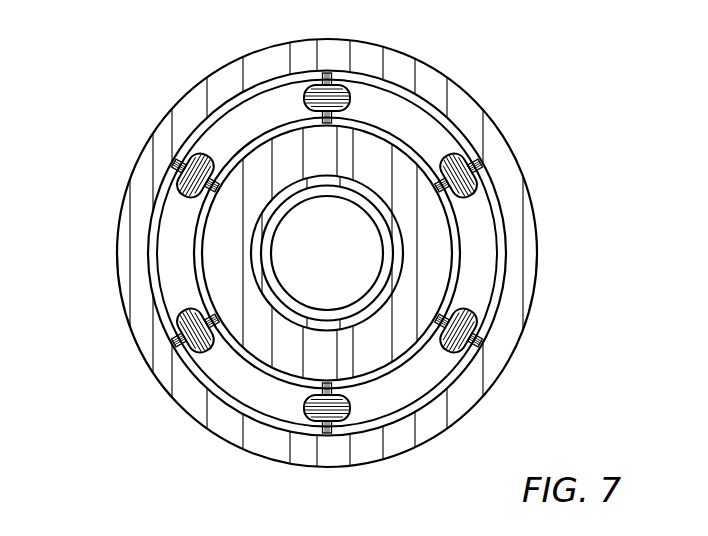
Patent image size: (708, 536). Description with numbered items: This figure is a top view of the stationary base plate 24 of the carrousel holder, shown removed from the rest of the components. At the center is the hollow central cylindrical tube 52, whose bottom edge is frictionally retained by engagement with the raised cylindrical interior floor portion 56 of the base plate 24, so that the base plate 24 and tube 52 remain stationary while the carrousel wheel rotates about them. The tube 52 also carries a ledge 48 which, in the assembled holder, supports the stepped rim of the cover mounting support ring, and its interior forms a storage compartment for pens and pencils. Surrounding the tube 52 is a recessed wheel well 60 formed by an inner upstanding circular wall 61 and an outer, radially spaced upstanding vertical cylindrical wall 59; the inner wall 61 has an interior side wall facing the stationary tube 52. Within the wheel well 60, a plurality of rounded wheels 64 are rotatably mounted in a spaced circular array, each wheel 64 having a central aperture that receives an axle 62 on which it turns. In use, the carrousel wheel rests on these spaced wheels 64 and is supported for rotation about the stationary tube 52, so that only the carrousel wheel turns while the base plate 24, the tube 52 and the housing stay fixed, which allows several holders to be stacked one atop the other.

The stationary base plate 24 is at (503, 353).
The ledge 48 is at (288, 298).
The hollow central cylindrical tube 52 is at (288, 193).
The raised cylindrical interior floor portion 56 is at (330, 253).
The outer upstanding vertical cylindrical wall 59 is at (207, 383).
The wheel well 60 is at (381, 253).
The inner upstanding circular wall 61 is at (190, 252).
The axle 62 is at (475, 165).
The rounded wheels 64 is at (465, 185).